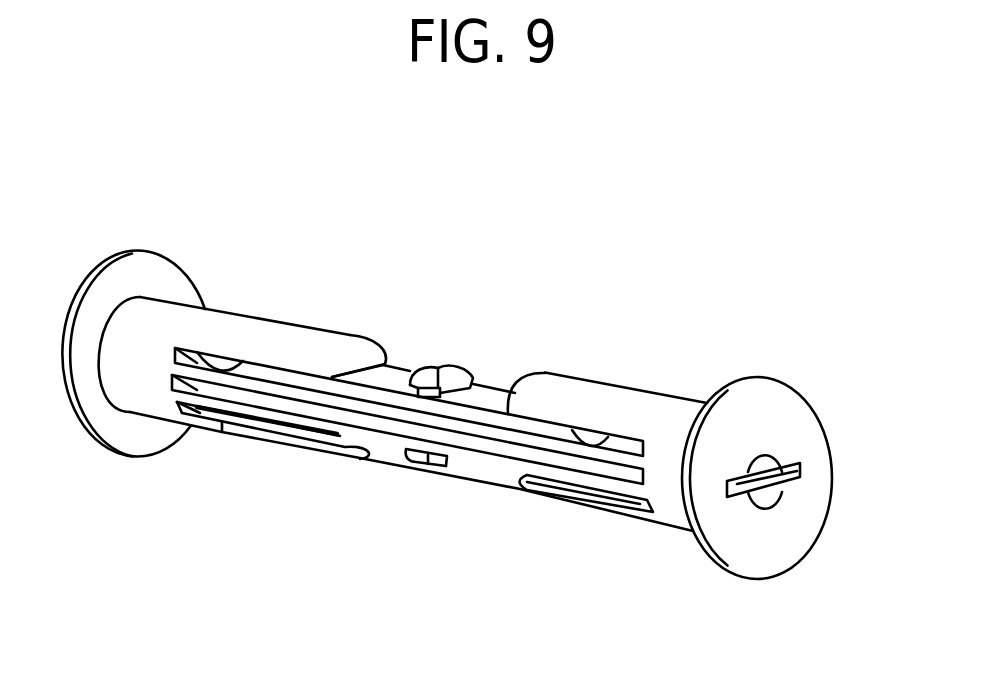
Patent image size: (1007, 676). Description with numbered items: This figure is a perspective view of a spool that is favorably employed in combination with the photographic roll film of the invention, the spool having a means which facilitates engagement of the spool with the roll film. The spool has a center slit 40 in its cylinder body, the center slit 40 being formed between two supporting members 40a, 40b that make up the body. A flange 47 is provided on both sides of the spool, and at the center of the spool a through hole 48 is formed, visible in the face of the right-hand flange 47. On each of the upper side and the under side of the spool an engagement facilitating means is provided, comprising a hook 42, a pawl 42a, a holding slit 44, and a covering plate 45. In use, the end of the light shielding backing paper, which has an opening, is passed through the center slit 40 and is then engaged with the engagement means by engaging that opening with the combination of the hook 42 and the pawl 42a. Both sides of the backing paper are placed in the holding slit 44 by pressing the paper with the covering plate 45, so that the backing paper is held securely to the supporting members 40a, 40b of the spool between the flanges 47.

The center slit 40 is at (600, 472).
The supporting member 40a is at (468, 428).
The supporting member 40b is at (497, 470).
The hook 42 is at (430, 367).
The pawl 42a is at (440, 370).
The holding slit 44 is at (198, 352).
The covering plate 45 is at (320, 328).
The flange 47 is at (95, 278).
The through hole 48 is at (767, 493).